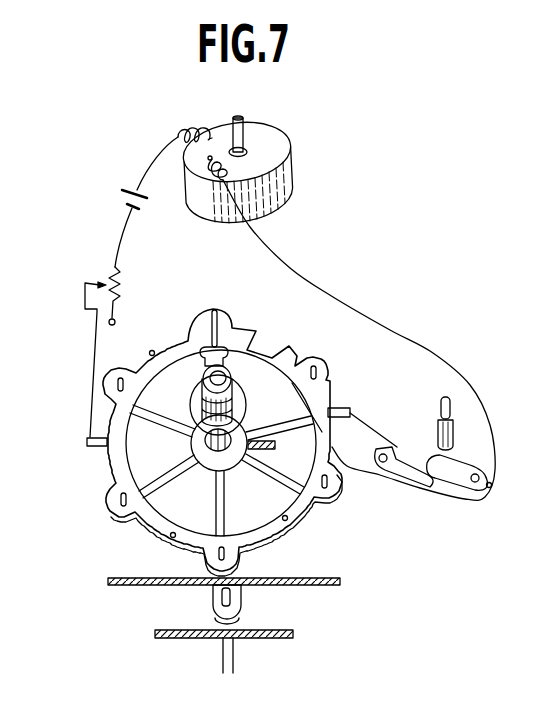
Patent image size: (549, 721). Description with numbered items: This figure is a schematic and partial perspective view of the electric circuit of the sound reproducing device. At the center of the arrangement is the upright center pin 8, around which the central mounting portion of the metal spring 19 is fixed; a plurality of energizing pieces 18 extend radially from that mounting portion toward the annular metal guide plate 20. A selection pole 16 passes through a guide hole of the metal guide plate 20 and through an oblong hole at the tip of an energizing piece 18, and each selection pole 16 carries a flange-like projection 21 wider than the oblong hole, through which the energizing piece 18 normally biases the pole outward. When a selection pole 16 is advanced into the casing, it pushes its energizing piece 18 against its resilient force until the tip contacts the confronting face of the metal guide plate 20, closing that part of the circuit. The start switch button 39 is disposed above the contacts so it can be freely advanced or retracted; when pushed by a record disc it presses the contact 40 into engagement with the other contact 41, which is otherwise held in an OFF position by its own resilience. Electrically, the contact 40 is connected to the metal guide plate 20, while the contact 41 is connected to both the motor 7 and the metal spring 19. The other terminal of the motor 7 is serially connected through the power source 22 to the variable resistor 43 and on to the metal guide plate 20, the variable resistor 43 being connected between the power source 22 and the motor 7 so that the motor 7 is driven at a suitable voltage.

The motor 7 is at (290, 164).
The center pin 8 is at (220, 373).
The selection pole 16 is at (125, 372).
The energizing piece 18 is at (155, 499).
The metal spring 19 is at (237, 467).
The metal guide plate 20 is at (112, 464).
The flange-like projection 21 is at (241, 619).
The power source 22 is at (118, 196).
The start switch button 39 is at (437, 404).
The contact of the start switch 40 is at (420, 470).
The other contact of the start switch 41 is at (460, 466).
The variable resistor 43 is at (85, 293).